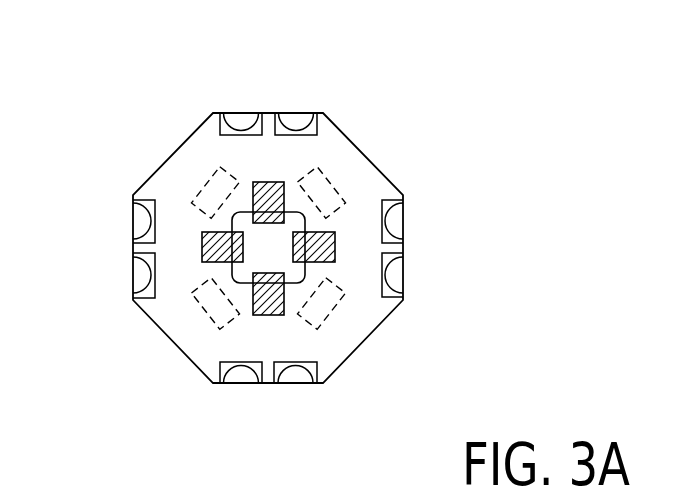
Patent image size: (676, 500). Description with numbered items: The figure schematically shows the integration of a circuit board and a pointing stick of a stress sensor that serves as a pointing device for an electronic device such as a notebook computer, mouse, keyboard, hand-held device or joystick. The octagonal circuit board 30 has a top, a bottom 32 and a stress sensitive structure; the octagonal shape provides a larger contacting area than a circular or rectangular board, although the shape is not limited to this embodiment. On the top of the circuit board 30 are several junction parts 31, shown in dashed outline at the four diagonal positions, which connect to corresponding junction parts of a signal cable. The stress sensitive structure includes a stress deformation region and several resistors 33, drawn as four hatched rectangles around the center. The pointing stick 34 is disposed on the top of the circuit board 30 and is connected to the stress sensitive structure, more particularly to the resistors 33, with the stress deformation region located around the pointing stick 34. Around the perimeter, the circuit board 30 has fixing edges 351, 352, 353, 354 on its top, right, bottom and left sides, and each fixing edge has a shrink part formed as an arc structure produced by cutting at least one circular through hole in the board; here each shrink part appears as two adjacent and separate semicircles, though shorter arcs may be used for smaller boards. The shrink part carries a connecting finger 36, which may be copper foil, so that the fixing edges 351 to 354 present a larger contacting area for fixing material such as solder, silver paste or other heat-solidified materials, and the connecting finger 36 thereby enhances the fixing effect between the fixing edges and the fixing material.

The circuit board 30 is at (108, 99).
The junction parts 31 is at (318, 212).
The bottom 32 is at (340, 153).
The resistors 33 is at (325, 255).
The pointing stick 34 is at (303, 213).
The fixing edge 351 is at (270, 113).
The fixing edge 352 is at (403, 248).
The fixing edge 353 is at (268, 383).
The fixing edge 354 is at (132, 248).
The connecting finger 36 is at (245, 367).